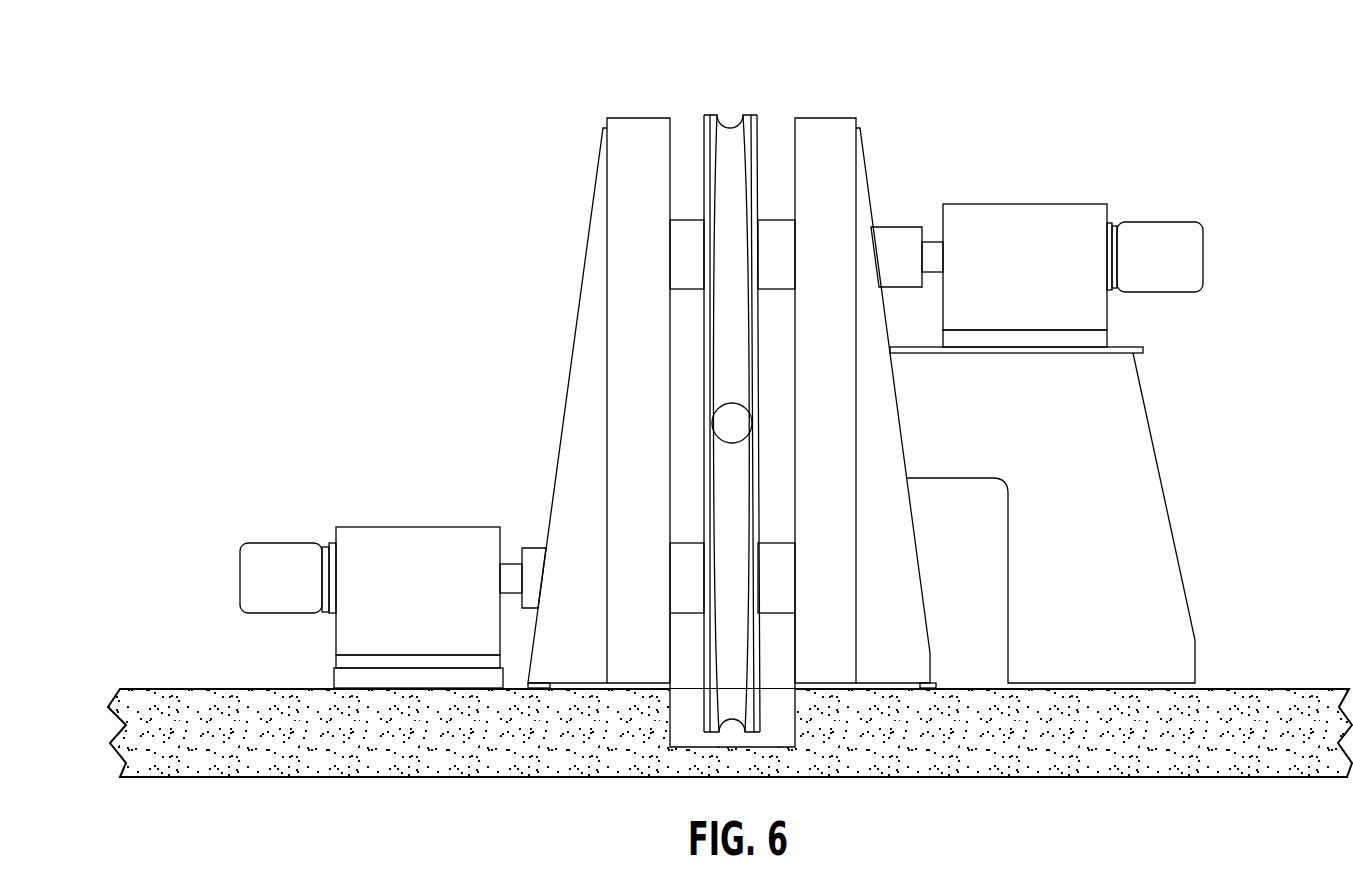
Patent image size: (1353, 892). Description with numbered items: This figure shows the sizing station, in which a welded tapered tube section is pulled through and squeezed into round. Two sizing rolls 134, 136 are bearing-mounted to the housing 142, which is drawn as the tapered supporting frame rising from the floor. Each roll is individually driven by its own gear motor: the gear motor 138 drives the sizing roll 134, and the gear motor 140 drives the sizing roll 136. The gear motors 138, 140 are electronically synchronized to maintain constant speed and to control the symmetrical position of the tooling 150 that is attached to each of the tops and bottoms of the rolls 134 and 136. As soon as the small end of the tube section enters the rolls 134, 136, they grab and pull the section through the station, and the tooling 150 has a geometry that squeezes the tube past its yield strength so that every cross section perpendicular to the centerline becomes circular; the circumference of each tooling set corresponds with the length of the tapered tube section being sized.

The sizing roll 134 is at (733, 182).
The sizing roll 136 is at (732, 630).
The gear motor 138 is at (1036, 222).
The gear motor 140 is at (410, 540).
The housing 142 is at (510, 284).
The tooling 150 is at (731, 128).